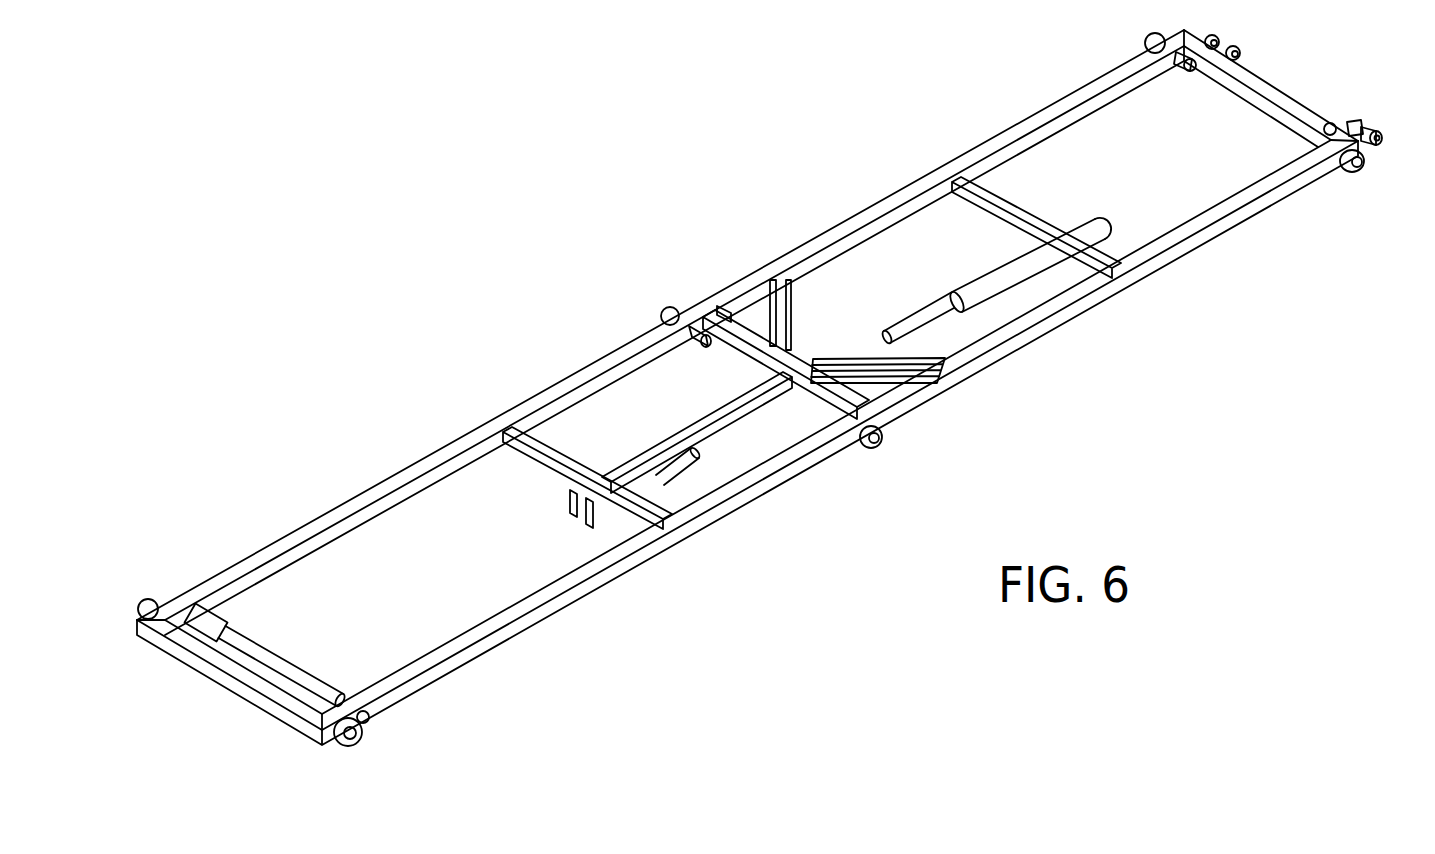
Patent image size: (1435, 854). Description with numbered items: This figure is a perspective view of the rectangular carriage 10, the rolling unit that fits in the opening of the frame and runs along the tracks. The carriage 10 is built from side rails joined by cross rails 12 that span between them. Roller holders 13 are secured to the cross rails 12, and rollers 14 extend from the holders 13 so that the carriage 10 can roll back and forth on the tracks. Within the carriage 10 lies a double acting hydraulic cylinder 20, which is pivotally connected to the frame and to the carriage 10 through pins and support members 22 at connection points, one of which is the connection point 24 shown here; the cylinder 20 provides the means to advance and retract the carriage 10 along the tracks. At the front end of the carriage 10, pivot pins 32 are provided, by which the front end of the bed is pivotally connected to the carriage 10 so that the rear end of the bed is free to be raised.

The carriage 10 is at (770, 501).
The cross rails 12 is at (1019, 203).
The roller holders 13 is at (1186, 72).
The rollers 14 is at (1148, 38).
The double acting hydraulic cylinder 20 is at (988, 275).
The support members 22 is at (568, 503).
The connection point 24 is at (574, 524).
The pivot pins 32 is at (1362, 125).